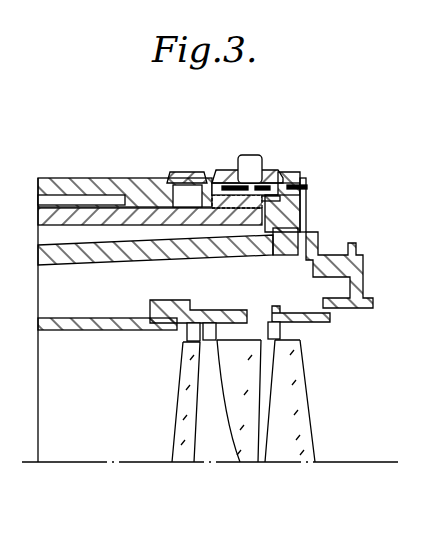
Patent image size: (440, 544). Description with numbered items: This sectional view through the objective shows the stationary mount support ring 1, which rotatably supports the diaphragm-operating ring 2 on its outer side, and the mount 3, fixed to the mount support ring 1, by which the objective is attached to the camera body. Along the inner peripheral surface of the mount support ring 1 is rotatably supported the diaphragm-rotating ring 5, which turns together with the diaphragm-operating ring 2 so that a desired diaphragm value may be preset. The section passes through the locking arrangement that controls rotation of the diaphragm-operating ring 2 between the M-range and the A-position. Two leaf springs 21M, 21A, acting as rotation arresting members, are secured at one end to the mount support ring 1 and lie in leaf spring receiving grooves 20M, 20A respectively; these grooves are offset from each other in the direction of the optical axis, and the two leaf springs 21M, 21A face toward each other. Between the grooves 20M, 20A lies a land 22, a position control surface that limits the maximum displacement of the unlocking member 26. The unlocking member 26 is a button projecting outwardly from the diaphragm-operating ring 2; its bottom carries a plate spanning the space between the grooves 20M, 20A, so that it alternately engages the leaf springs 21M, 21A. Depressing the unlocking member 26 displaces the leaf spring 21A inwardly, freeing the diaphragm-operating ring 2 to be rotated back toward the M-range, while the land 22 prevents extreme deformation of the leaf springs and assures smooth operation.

The mount support ring 1 is at (182, 172).
The diaphragm-operating ring 2 is at (306, 180).
The mount 3 is at (307, 212).
The diaphragm-rotating ring 5 is at (312, 236).
The leaf spring receiving groove 20A is at (239, 261).
The leaf spring receiving groove 20M is at (277, 258).
The leaf spring 21A is at (228, 171).
The leaf spring 21M is at (305, 175).
The land 22 is at (268, 182).
The unlocking member 26 is at (259, 158).